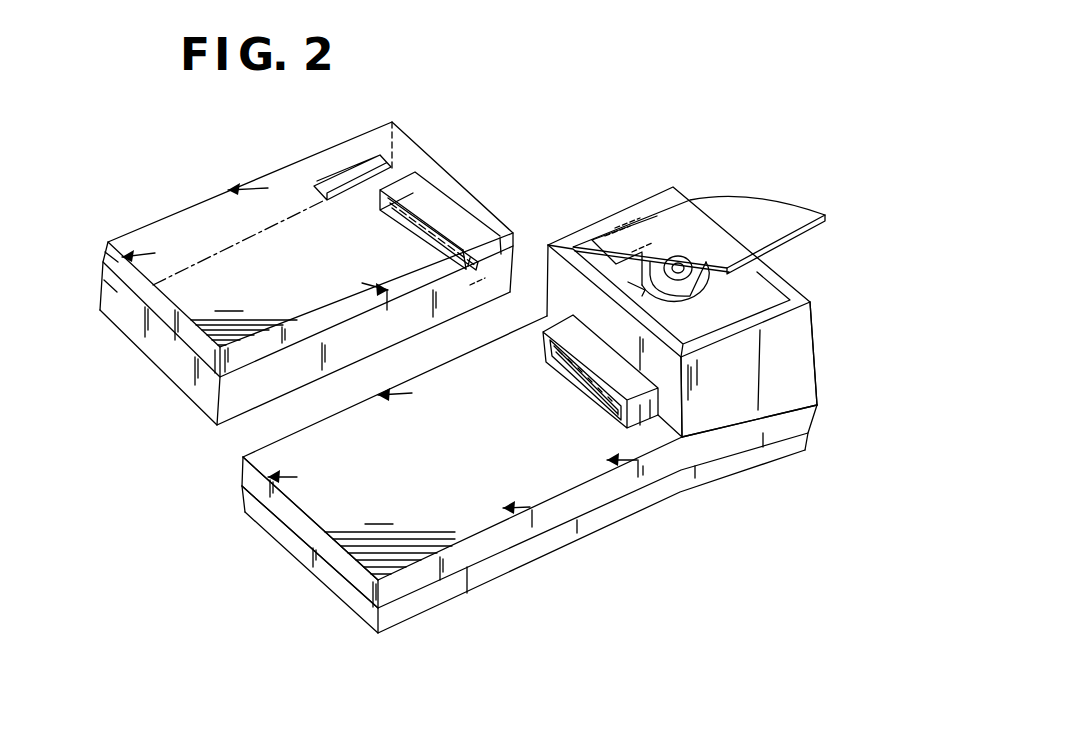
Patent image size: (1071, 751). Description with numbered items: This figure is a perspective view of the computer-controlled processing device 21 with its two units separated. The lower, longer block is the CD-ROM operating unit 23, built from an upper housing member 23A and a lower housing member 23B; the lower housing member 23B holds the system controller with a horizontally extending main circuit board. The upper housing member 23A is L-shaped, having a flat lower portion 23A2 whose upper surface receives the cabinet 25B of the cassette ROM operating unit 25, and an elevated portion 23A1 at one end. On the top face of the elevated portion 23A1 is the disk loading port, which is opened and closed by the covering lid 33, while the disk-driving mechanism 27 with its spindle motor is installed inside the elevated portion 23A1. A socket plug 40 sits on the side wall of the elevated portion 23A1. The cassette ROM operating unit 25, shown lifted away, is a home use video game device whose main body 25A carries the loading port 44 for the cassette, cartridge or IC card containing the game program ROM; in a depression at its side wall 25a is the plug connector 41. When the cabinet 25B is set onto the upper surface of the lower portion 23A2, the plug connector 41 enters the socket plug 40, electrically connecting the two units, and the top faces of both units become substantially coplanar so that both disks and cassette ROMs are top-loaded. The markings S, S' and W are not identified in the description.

The computer-controlled processing device 21 is at (625, 195).
The CD-ROM operating unit 23 is at (593, 224).
The upper housing member 23A is at (812, 302).
The elevated portion 23A1 is at (818, 383).
The lower portion 23A2 is at (545, 522).
The lower housing member 23B is at (670, 483).
The cassette ROM operating unit 25 is at (448, 150).
The main body 25A is at (215, 233).
The cabinet 25B is at (142, 229).
The side wall 25a is at (508, 278).
The disk-driving mechanism 27 is at (743, 298).
The covering lid 33 is at (742, 223).
The socket plug 40 is at (641, 425).
The plug connector 41 is at (440, 218).
The loading port 44 is at (338, 180).
The space S is at (496, 448).
The space under lid S' is at (698, 198).
The wall W is at (678, 408).